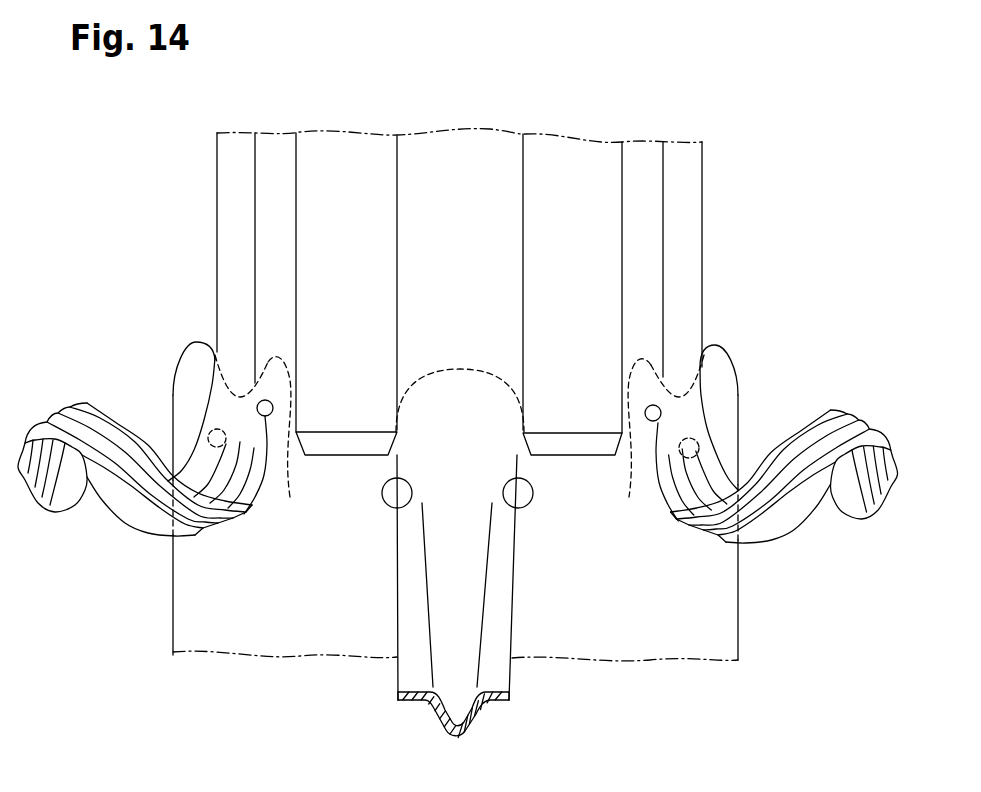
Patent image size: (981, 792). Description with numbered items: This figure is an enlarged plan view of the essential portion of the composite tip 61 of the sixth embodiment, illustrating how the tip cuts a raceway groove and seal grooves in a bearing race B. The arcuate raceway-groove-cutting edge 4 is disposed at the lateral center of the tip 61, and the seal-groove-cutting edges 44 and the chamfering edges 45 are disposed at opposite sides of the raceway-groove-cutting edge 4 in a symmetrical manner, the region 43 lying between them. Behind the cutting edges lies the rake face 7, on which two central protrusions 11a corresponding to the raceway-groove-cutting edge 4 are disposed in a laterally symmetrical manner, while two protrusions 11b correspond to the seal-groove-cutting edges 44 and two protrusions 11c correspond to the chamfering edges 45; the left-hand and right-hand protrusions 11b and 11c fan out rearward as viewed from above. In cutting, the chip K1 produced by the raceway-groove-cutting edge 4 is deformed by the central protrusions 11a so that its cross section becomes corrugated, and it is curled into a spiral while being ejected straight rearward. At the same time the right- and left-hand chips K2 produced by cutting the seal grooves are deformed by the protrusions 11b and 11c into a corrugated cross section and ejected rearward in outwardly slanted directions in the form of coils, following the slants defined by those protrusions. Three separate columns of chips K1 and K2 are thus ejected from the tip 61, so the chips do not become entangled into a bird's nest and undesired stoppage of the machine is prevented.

The bearing race B is at (217, 222).
The holding portion 43 is at (268, 290).
The seal-groove-cutting edge 44 is at (268, 365).
The chamfering edge 45 is at (201, 340).
The raceway-groove-cutting edge 4 is at (460, 365).
The protrusion 11a is at (384, 496).
The protrusion 11b is at (459, 469).
The protrusion 11c is at (208, 436).
The tip 61 is at (147, 345).
The rake face 7 is at (685, 620).
The chip K1 is at (397, 677).
The chip K2 is at (133, 525).